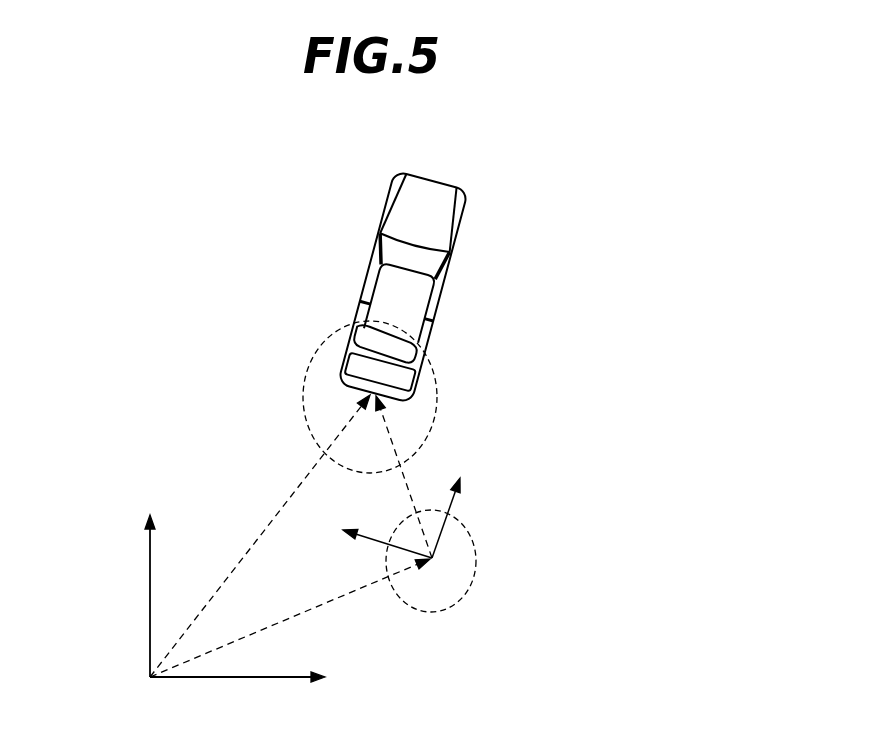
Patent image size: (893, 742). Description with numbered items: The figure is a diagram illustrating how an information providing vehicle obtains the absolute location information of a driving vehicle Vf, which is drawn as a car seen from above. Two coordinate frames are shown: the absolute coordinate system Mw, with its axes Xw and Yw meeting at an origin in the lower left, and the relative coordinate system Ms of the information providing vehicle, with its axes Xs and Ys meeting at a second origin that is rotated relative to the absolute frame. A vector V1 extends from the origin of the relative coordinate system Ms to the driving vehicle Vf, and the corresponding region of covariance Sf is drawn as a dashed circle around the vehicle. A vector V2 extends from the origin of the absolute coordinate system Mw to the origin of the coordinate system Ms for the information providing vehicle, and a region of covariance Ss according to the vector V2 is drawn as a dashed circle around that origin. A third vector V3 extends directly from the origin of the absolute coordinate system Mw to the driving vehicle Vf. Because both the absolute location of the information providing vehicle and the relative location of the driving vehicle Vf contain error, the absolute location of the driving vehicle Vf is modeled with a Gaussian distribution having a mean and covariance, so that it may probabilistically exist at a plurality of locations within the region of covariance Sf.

The driving vehicle Vf is at (467, 234).
The region of covariance Sf is at (437, 399).
The region of covariance Ss is at (477, 561).
The relative coordinate system Ms is at (417, 516).
The sensor coordinate X axis Xs is at (460, 516).
The sensor coordinate Y axis Ys is at (376, 539).
The absolute coordinate system Mw is at (212, 610).
The world coordinate X axis Xw is at (244, 691).
The world coordinate Y axis Yw is at (135, 593).
The vector V1 is at (404, 477).
The vector V2 is at (290, 618).
The vector V3 is at (260, 536).